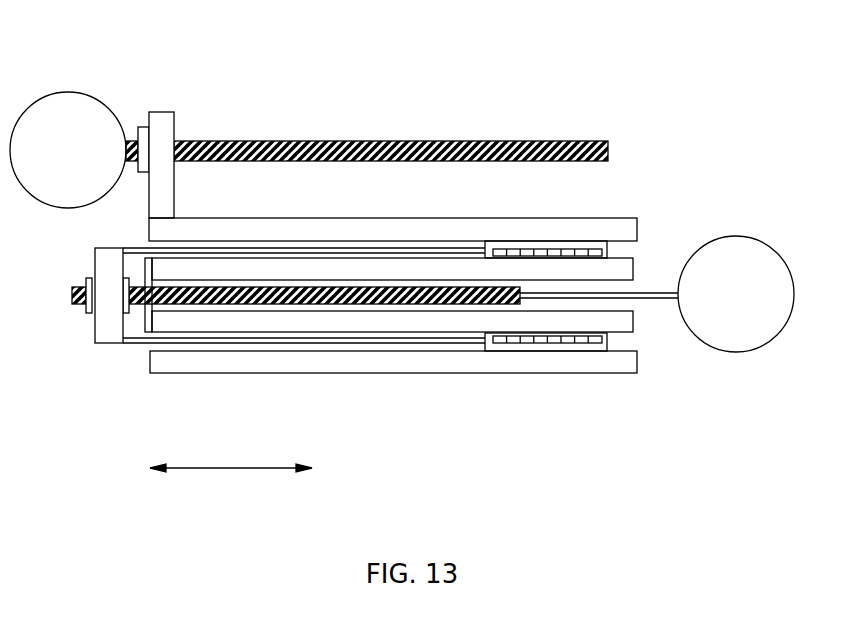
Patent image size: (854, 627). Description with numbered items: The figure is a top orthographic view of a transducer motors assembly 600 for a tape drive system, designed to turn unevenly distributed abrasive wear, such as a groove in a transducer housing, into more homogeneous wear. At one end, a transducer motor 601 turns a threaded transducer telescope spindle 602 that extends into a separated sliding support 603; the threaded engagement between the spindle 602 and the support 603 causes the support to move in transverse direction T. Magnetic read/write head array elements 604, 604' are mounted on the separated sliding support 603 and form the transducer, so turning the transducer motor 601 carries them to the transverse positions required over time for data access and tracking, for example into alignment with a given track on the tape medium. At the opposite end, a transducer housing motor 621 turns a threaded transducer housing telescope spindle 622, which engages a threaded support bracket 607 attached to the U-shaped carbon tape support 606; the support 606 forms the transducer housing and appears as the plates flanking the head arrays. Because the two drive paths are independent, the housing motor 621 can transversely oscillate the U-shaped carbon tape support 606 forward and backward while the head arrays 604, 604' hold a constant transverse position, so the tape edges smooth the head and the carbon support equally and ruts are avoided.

The transducer motors assembly 600 is at (402, 280).
The transducer motor 601 is at (718, 305).
The threaded transducer telescope spindle 602 is at (72, 292).
The separated sliding support 603 is at (103, 345).
The magnetic read/write head array element 604 is at (593, 373).
The magnetic read/write head array element 604' is at (595, 219).
The U-shaped carbon tape support 606 is at (345, 218).
The threaded support bracket 607 is at (161, 112).
The transducer housing motor 621 is at (50, 161).
The threaded transducer housing telescope spindle 622 is at (552, 140).